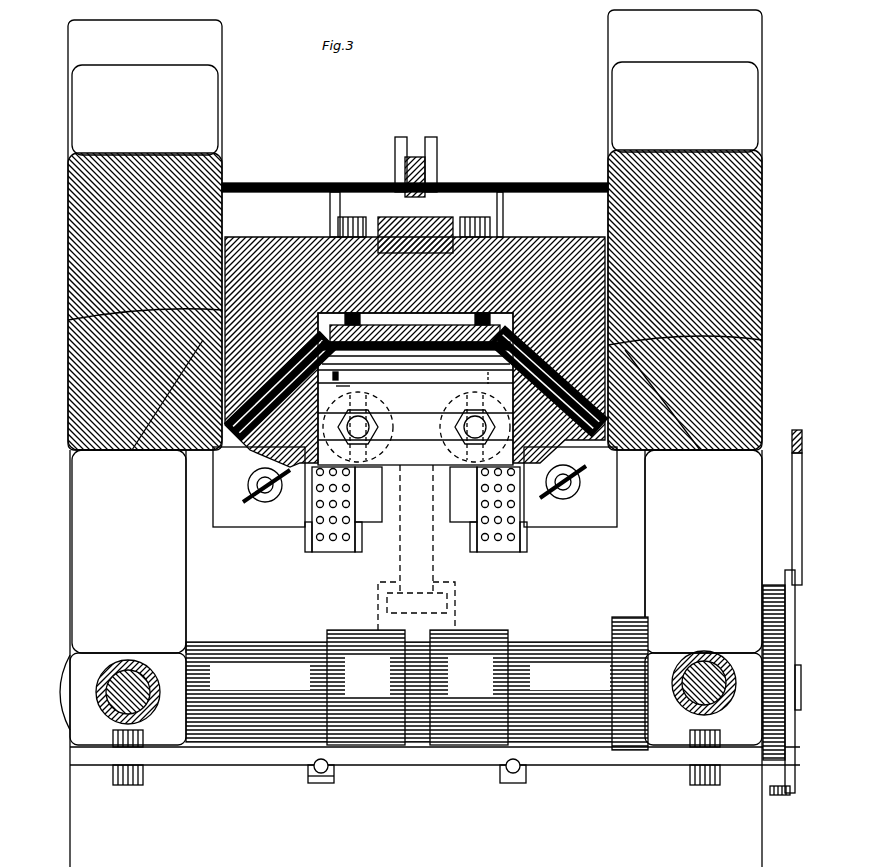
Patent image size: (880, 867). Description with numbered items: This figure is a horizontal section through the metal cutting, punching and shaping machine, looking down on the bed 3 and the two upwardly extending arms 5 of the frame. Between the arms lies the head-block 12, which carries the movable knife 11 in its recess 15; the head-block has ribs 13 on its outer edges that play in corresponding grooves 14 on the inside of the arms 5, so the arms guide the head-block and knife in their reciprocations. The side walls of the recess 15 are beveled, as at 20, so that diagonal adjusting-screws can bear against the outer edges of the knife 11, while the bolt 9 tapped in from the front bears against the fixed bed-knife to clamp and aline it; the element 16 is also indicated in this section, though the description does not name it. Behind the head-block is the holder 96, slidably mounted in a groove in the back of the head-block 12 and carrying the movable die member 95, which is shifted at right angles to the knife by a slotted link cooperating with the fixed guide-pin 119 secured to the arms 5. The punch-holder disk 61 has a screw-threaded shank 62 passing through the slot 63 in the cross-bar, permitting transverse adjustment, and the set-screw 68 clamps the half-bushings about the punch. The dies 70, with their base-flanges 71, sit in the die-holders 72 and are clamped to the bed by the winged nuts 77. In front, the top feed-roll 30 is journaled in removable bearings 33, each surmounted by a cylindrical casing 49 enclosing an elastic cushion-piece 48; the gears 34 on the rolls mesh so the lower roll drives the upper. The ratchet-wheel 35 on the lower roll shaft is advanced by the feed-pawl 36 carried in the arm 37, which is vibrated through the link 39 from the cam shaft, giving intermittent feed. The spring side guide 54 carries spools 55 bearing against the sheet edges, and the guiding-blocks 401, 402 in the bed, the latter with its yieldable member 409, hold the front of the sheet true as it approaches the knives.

The bed 3 is at (329, 597).
The arms 5 is at (82, 372).
The bolt 9 is at (448, 603).
The movable knife 11 is at (492, 336).
The head-block 12 is at (268, 255).
The ribs 13 is at (150, 445).
The grooves 14 is at (140, 312).
The recess 15 is at (458, 328).
The roller 16 is at (215, 442).
The beveled side walls 20 is at (245, 480).
The top feed-roll 30 is at (240, 658).
The removable bearings 33 is at (78, 725).
The gears 34 is at (628, 618).
The ratchet-wheel 35 is at (782, 745).
The feed-pawl 36 is at (774, 797).
The arm 37 is at (790, 634).
The link 39 is at (793, 455).
The elastic cushion-piece 48 is at (124, 688).
The cylindrical casing 49 is at (136, 662).
The side guide 54 is at (335, 768).
The spools 55 is at (316, 780).
The disk 61 is at (395, 440).
The screw-threaded shank 62 is at (385, 428).
The slot 63 is at (430, 462).
The set-screw 68 is at (452, 466).
The dies 70 is at (326, 552).
The base-flanges 71 is at (310, 540).
The die-holders 72 is at (375, 512).
The winged nuts 77 is at (265, 497).
The movable die member 95 is at (350, 195).
The holder 96 is at (432, 232).
The guide-pin 119 is at (505, 185).
The guiding-block 401 is at (486, 378).
The guiding-block 402 is at (356, 386).
The yieldable member 409 is at (340, 376).